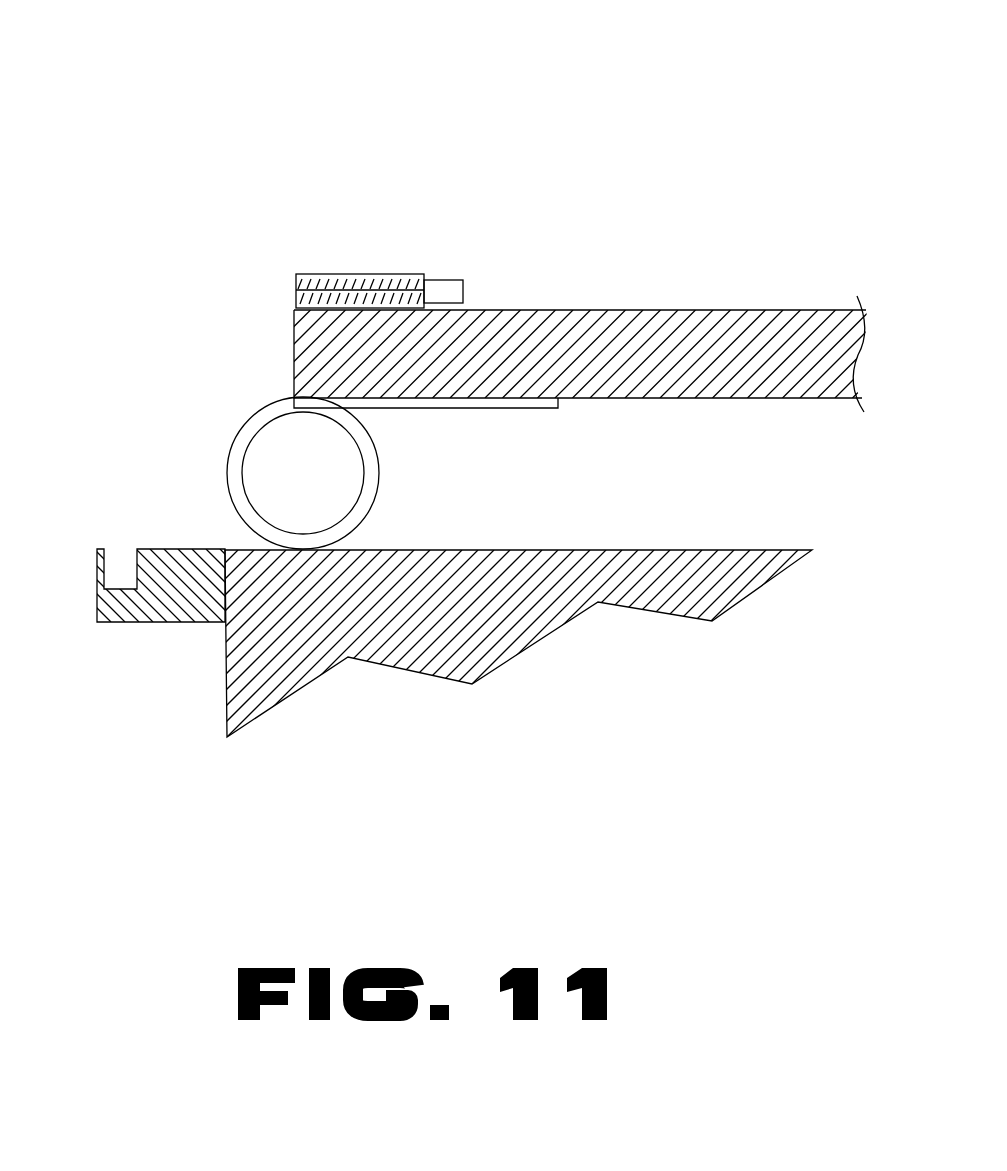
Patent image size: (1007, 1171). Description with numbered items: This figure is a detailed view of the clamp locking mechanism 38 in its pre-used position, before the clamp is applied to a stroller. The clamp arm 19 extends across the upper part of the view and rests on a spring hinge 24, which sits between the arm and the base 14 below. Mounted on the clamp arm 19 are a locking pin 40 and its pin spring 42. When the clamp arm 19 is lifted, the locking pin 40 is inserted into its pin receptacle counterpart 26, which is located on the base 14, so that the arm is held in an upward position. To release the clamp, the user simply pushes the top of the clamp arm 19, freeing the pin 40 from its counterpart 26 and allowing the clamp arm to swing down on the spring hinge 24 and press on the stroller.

The clamp locking mechanism 38 is at (640, 172).
The clamp arm 19 is at (744, 312).
The pin spring 42 is at (386, 272).
The locking pin 40 is at (447, 280).
The spring hinge 24 is at (377, 472).
The pin receptacle counterpart 26 is at (125, 560).
The base 14 is at (586, 610).